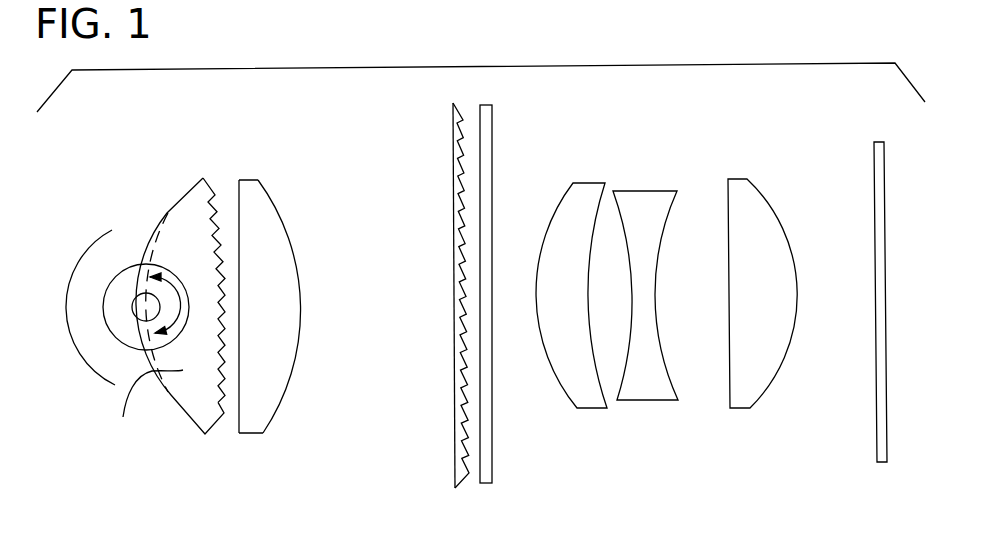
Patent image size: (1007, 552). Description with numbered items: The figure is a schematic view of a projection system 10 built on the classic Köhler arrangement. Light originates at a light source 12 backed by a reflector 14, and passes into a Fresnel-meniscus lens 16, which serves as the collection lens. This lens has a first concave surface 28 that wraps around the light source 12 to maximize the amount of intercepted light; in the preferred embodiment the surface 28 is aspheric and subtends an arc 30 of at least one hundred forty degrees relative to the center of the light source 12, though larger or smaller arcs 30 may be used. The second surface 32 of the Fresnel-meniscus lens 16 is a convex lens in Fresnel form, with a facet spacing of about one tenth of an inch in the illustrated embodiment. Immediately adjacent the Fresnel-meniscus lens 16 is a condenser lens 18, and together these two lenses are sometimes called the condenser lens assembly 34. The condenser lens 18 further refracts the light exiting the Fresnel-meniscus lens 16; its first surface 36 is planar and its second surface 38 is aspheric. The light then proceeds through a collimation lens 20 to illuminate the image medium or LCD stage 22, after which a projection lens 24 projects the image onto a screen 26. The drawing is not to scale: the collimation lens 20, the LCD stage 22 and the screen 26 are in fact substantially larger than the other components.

The projection system 10 is at (133, 167).
The light source 12 is at (137, 256).
The reflector 14 is at (83, 368).
The Fresnel-meniscus lens 16 is at (183, 417).
The condenser lens 18 is at (252, 435).
The collimation lens 20 is at (455, 460).
The LCD stage 22 is at (483, 484).
The projection lens 24 is at (782, 417).
The screen 26 is at (882, 463).
The first concave surface 28 is at (144, 408).
The arc 30 is at (170, 288).
The second surface 32 is at (228, 407).
The condenser lens assembly 34 is at (250, 160).
The first surface 36 is at (236, 192).
The second surface 38 is at (283, 212).